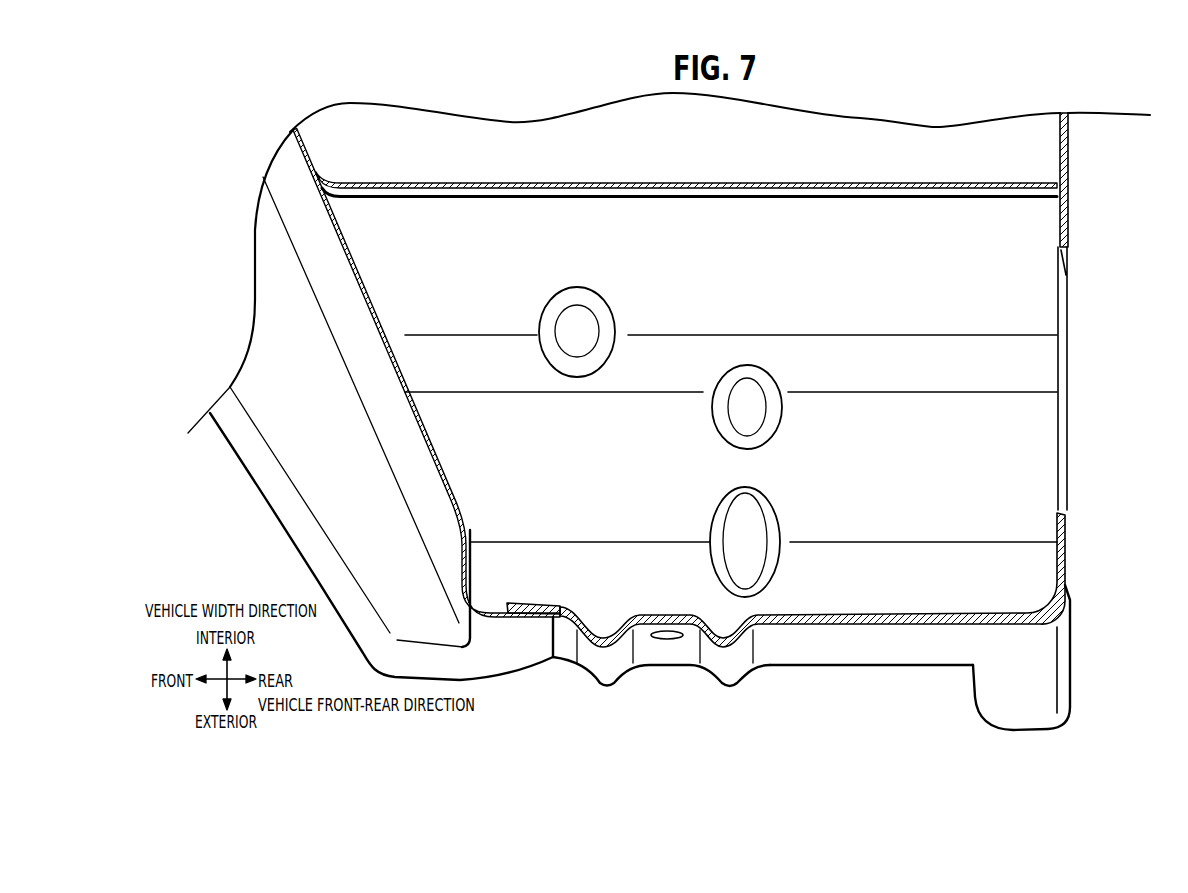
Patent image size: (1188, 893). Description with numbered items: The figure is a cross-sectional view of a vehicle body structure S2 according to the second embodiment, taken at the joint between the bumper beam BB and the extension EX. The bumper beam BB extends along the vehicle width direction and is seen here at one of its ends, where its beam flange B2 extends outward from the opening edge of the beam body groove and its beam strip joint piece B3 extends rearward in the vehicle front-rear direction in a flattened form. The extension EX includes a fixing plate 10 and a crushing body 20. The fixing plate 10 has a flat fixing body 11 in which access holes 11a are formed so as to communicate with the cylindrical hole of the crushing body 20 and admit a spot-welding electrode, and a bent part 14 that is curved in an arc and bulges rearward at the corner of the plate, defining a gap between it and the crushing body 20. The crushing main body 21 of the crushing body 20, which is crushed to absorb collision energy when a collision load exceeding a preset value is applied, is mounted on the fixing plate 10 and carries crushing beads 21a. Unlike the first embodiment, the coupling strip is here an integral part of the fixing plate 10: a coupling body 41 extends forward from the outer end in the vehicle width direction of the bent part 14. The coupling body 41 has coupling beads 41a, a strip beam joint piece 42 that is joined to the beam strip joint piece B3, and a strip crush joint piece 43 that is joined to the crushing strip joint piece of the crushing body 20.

The fixing plate 10 is at (1106, 180).
The fixing body 11 is at (1070, 165).
The access holes 11a is at (1070, 275).
The bent part 14 is at (1067, 630).
The crushing body 20 is at (720, 305).
The crushing main body 21 is at (685, 237).
The crushing beads 21a is at (747, 410).
The coupling body 41 is at (848, 633).
The coupling beads 41a is at (727, 680).
The strip beam joint piece 42 is at (535, 603).
The strip crush joint piece 43 is at (908, 667).
The beam flange B2 is at (228, 412).
The beam strip joint piece B3 is at (530, 637).
The bumper beam BB is at (237, 502).
The vehicle body structure S2 is at (283, 120).
The extension EX is at (945, 118).